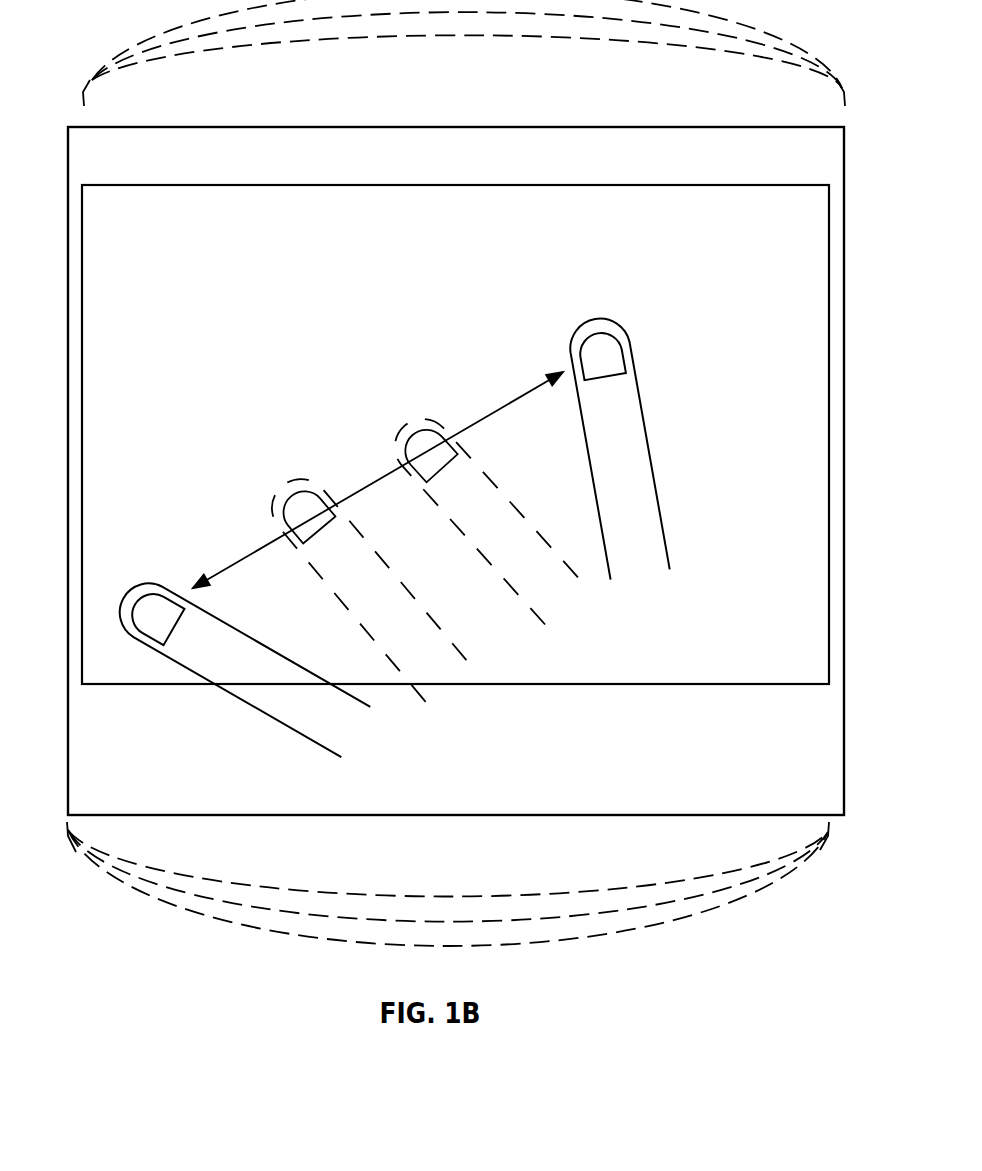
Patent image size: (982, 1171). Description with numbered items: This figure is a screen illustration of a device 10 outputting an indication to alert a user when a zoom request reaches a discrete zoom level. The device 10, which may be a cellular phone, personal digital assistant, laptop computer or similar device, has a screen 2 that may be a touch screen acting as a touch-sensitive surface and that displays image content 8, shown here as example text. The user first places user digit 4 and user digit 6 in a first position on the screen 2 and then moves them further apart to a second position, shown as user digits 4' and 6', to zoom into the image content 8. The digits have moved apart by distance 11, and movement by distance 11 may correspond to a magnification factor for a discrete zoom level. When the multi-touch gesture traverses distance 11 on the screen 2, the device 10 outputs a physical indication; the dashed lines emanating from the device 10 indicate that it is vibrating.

The device 10 is at (522, 127).
The screen 2 is at (350, 185).
The image content 8 is at (383, 328).
The user digit 4 is at (376, 590).
The user digit 6 is at (491, 557).
The user digit 4' is at (245, 681).
The user digit 6' is at (619, 466).
The distance 11 is at (235, 565).